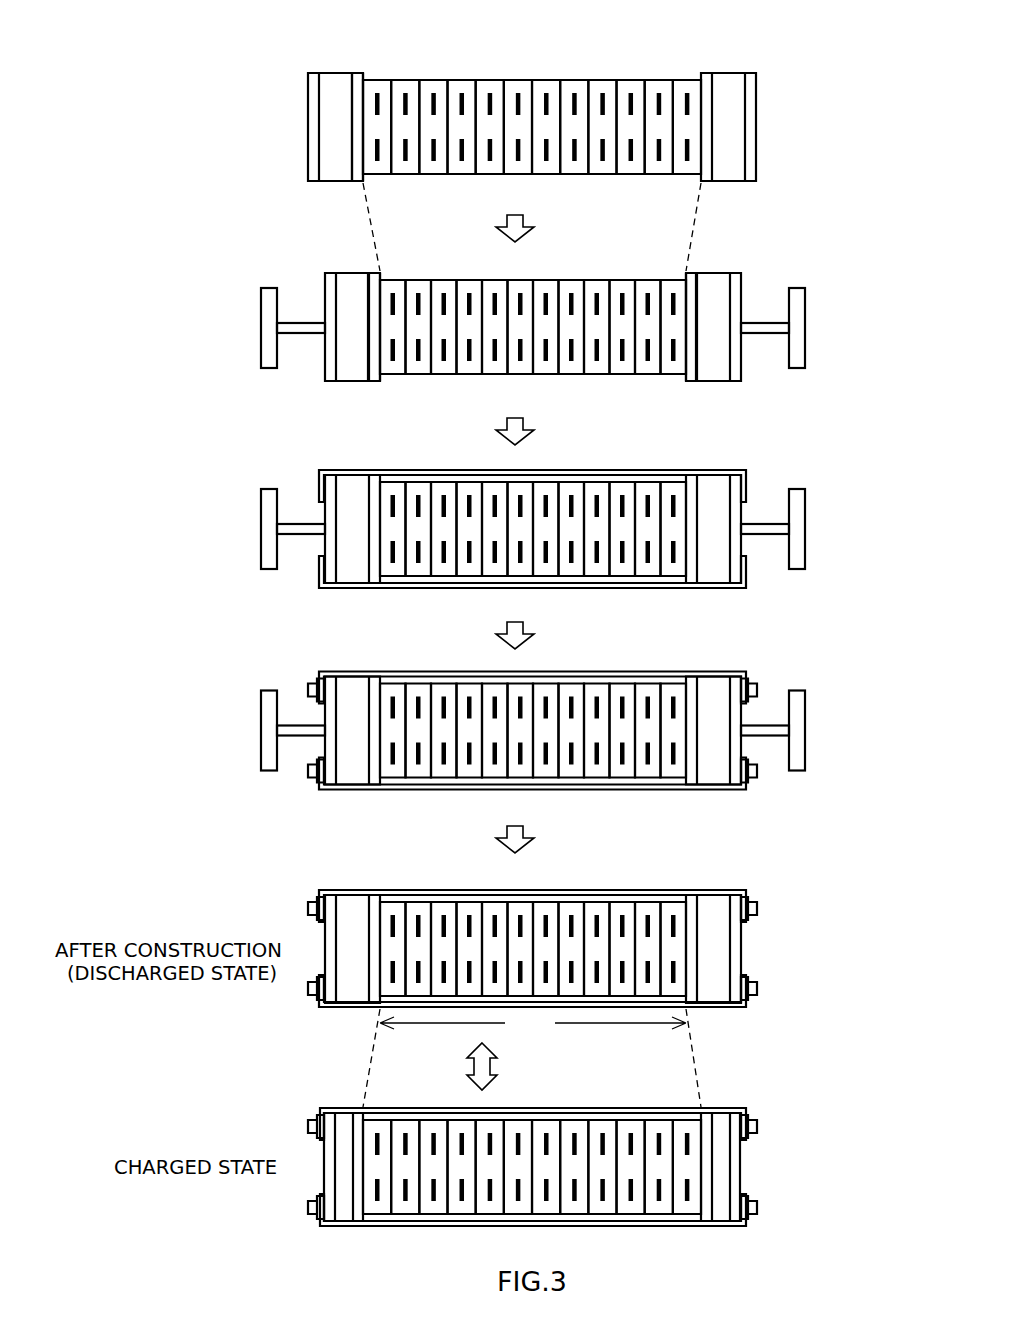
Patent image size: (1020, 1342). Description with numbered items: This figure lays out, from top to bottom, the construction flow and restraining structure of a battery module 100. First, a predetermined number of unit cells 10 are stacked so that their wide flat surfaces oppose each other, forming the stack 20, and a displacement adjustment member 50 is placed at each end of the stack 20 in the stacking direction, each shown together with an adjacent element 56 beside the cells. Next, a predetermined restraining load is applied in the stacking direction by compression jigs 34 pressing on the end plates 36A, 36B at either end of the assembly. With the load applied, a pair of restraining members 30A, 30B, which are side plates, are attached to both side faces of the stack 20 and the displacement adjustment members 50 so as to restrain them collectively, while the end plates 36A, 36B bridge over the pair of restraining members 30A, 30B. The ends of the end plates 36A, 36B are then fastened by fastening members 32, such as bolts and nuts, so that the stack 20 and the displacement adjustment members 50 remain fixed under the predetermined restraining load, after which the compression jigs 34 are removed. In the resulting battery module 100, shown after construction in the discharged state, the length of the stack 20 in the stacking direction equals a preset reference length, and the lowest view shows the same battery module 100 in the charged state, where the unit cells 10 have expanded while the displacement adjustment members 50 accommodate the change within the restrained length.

The unit cell 10 is at (386, 79).
The stack 20 is at (518, 79).
The restraining member 30A is at (566, 470).
The restraining member 30B is at (626, 589).
The fastening member 32 is at (308, 690).
The compression jig 34 is at (261, 299).
The end plate 36A is at (308, 122).
The end plate 36B is at (757, 122).
The displacement adjustment member 50 is at (332, 73).
The spacer plate 56 is at (359, 72).
The battery module 100 is at (787, 946).